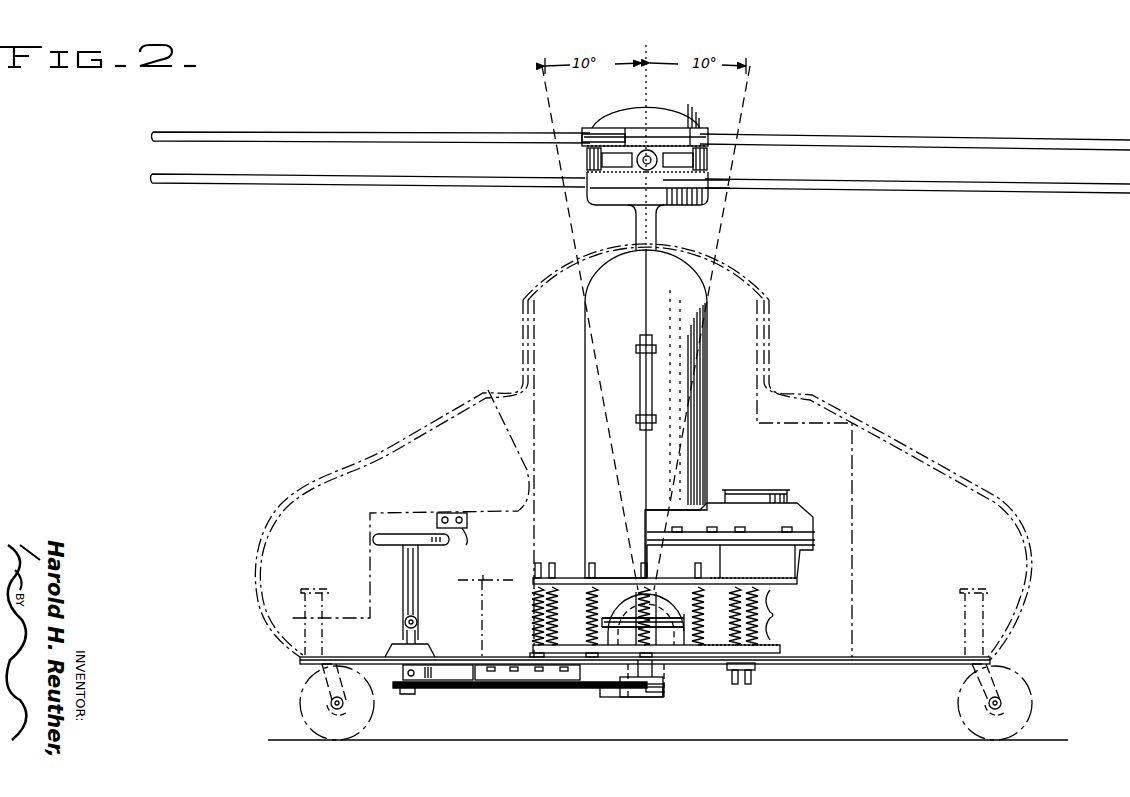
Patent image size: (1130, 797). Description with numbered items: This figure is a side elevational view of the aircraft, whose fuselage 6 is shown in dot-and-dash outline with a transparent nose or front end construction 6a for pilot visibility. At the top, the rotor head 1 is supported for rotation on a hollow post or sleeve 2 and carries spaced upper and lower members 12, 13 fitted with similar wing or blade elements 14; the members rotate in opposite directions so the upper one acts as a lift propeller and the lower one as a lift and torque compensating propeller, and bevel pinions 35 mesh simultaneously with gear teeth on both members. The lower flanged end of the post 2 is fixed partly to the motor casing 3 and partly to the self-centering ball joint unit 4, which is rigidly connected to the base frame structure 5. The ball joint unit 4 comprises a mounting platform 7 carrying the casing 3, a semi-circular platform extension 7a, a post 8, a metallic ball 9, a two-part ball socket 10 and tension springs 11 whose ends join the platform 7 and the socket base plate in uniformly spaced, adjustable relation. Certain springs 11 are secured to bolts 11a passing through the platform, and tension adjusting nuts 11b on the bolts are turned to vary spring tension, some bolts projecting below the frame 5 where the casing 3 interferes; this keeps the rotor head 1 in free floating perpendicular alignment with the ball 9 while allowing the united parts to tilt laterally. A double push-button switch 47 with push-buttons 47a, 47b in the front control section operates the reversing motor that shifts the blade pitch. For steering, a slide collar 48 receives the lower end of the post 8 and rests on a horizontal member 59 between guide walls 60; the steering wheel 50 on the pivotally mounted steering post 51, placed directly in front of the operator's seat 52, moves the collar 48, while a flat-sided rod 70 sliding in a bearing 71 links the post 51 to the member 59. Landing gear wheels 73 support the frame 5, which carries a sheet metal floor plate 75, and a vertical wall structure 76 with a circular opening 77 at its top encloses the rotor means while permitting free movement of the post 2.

The rotor head 1 is at (705, 108).
The hollow post or sleeve 2 is at (658, 240).
The engine or motor casing 3 is at (780, 510).
The self-centering ball joint unit 4 is at (478, 126).
The base frame structure 5 is at (830, 665).
The aircraft body or fuselage 6 is at (920, 452).
The nose or front end construction 6a is at (336, 447).
The mounting platform 7 is at (700, 453).
The semi-circular platform extension 7a is at (600, 522).
The post 8 is at (641, 698).
The metallic ball 9 is at (526, 160).
The split ball socket or bearing 10 is at (620, 620).
The tension springs 11 is at (532, 600).
The bolts 11a is at (580, 562).
The tension adjusting nuts 11b is at (634, 560).
The upper rotor member 12 is at (616, 118).
The lower rotor member 13 is at (612, 202).
The wing, plane, or blade elements 14 is at (318, 138).
The bevel pinions 35 is at (586, 138).
The double push-button switch 47 is at (466, 514).
The push-button 47a is at (444, 514).
The push-button 47b is at (481, 539).
The slide collar or block 48 is at (656, 694).
The steering wheel 50 is at (380, 533).
The steering post or lever 51 is at (408, 598).
The seat 52 is at (484, 578).
The horizontally arranged member 59 is at (622, 692).
The guide walls 60 is at (663, 690).
The flat-sided rod 70 is at (458, 678).
The bearing 71 is at (490, 680).
The wheels 73 is at (320, 732).
The floor plate or covering 75 is at (906, 656).
The vertical wall structure 76 is at (536, 390).
The circular opening 77 is at (566, 250).